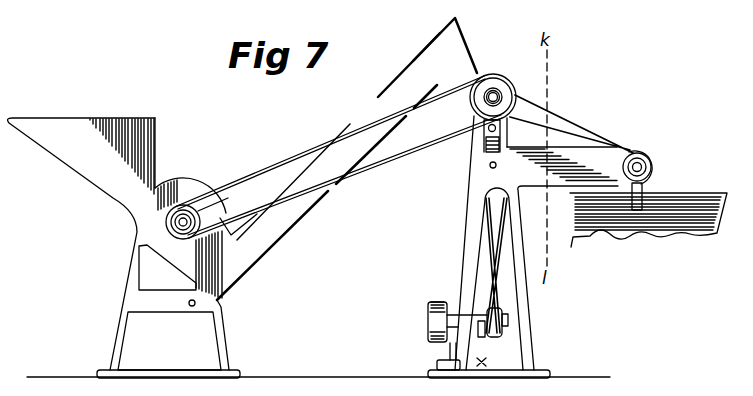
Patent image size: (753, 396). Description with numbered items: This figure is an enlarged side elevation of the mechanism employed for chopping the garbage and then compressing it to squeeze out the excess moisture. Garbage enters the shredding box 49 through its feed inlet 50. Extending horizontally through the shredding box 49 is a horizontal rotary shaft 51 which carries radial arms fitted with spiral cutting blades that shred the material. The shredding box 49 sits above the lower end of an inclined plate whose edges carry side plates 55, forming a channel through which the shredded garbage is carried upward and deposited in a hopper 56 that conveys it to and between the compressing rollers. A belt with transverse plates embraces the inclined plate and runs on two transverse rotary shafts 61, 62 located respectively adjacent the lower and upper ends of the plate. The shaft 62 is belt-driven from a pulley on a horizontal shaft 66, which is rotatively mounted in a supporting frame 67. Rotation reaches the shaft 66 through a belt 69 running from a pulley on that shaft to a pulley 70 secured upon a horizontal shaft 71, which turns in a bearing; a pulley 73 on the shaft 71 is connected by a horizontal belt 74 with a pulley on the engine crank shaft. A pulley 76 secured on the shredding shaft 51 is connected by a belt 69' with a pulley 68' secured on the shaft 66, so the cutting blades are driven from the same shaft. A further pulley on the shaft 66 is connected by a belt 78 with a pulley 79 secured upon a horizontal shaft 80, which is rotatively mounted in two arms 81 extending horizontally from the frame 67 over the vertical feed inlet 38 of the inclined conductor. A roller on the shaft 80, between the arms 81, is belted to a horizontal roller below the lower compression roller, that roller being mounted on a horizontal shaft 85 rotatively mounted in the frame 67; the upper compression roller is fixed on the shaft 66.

The vertical feed inlet 38 is at (705, 196).
The shredding box 49 is at (182, 180).
The feed inlet 50 is at (92, 244).
The horizontal rotary shaft 51 is at (168, 224).
The side plates 55 is at (275, 222).
The hopper 56 is at (428, 53).
The transverse rotary shaft 61 is at (190, 307).
The transverse rotary shaft 62 is at (357, 129).
The horizontal shaft 66 is at (495, 90).
The supporting frame 67 is at (527, 325).
The pulley 68' is at (469, 109).
The belt 69 is at (519, 265).
The belt 69' is at (339, 157).
The pulley 70 is at (503, 333).
The horizontal shaft 71 is at (505, 319).
The pulley 73 is at (428, 322).
The horizontal belt 74 is at (438, 302).
The pulley 76 is at (218, 205).
The belt 78 is at (573, 132).
The pulley 79 is at (633, 152).
The horizontal shaft 80 is at (652, 167).
The arms 81 is at (562, 164).
The horizontal shaft 85 is at (489, 166).